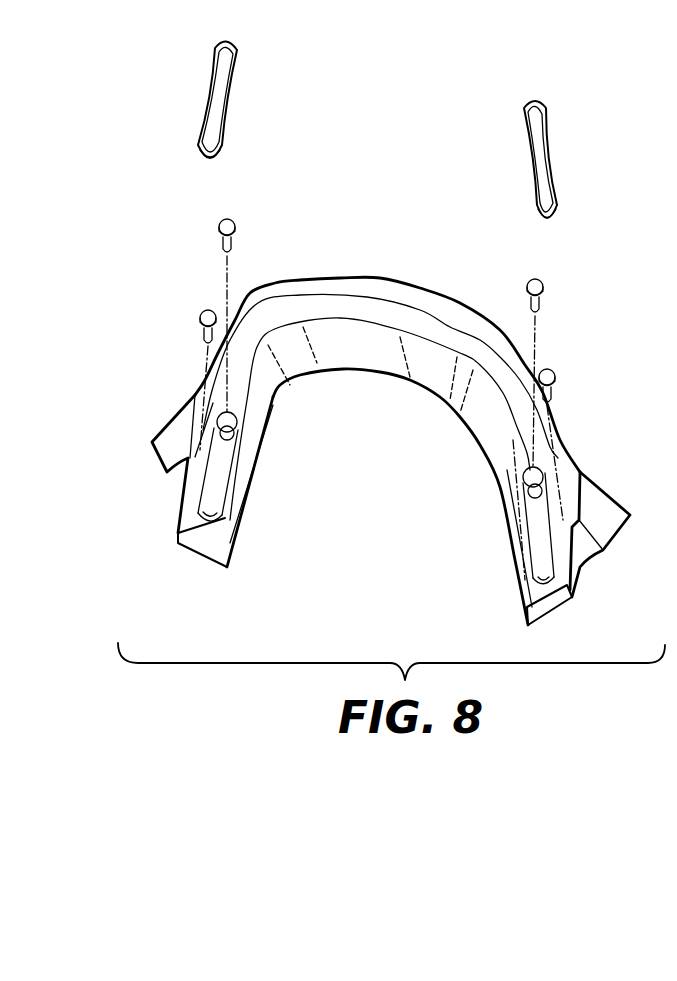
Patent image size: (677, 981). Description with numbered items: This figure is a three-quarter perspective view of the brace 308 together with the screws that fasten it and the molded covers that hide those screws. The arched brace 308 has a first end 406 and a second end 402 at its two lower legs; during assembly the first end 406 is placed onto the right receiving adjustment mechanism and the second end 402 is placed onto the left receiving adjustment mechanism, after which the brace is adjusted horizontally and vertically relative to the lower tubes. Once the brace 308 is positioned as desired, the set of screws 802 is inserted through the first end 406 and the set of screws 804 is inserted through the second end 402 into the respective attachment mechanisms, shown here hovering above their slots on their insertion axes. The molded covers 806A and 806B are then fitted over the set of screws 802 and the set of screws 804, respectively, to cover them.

The brace 308 is at (393, 288).
The second end 402 is at (583, 573).
The first end 406 is at (243, 482).
The set of screws 802 is at (193, 220).
The set of screws 804 is at (564, 275).
The molded cover 806A is at (207, 117).
The molded cover 806B is at (547, 175).